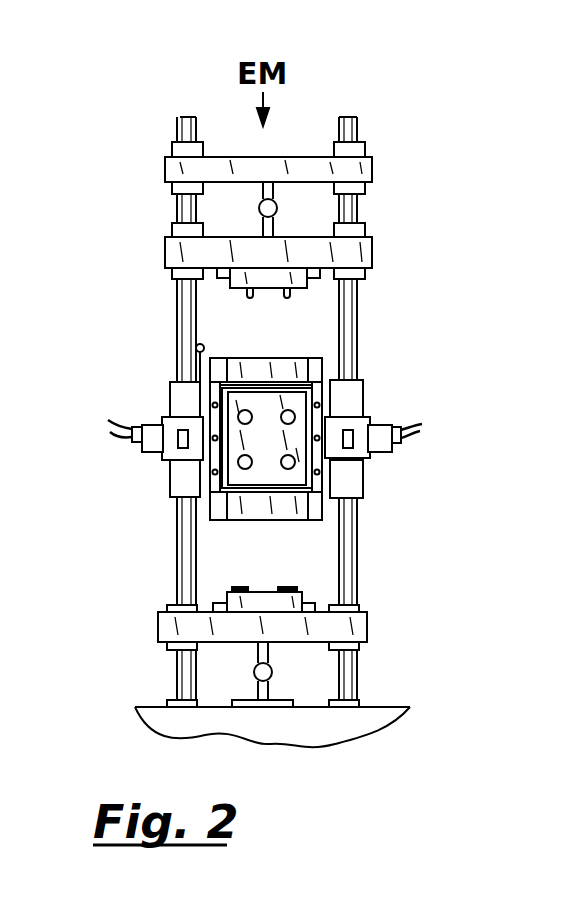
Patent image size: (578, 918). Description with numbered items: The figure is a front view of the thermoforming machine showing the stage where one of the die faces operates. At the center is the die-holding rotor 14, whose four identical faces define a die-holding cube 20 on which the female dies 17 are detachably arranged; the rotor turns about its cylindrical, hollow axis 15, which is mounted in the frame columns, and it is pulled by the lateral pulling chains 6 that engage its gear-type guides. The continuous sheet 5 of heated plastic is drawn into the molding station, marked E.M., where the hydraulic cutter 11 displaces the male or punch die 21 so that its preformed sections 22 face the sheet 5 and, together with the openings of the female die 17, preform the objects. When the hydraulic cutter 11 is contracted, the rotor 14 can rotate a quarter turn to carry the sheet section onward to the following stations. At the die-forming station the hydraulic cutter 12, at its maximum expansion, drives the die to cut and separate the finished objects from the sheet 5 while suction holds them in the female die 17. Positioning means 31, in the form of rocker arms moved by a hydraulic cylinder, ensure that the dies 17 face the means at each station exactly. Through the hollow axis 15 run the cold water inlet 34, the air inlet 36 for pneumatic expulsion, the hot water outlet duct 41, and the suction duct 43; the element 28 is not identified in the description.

The continuous sheet 5 is at (248, 358).
The lateral pulling chains 6 is at (325, 372).
The hydraulic cutter 11 is at (259, 207).
The hydraulic cutter 12 is at (272, 668).
The die-holding rotor 14 is at (134, 386).
The axis 15 is at (200, 463).
The female dies 17 is at (293, 400).
The die-holding cube 20 is at (265, 520).
The male or punch die 21 is at (167, 285).
The preformed sections 22 is at (245, 292).
The lower grip block 28 is at (250, 600).
The positioning means 31 is at (195, 346).
The cold water inlet 34 is at (410, 440).
The air inlet 36 is at (417, 419).
The outlet duct 41 is at (128, 443).
The duct 43 is at (117, 416).